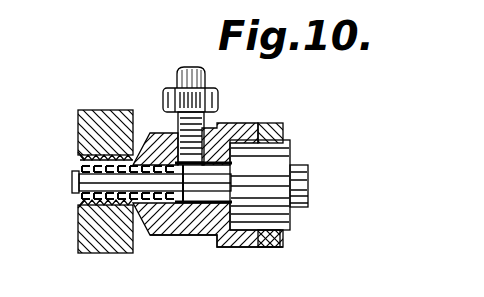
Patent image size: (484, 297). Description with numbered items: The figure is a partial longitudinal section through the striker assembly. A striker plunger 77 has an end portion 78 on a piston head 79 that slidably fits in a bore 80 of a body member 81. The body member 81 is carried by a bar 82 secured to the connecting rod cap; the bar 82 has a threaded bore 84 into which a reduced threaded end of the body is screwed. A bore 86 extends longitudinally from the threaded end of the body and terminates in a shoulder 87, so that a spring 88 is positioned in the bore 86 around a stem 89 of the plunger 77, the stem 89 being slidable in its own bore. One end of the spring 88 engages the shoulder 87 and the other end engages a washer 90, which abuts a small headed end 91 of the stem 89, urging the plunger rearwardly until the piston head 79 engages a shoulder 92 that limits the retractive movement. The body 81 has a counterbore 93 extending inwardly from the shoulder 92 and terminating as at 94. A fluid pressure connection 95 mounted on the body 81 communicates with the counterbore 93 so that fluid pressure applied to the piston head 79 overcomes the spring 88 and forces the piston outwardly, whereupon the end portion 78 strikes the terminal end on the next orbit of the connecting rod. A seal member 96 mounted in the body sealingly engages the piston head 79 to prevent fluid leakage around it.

The striker plunger 77 is at (310, 176).
The end portion 78 is at (308, 202).
The piston head 79 is at (290, 139).
The bore 80 is at (261, 139).
The body member 81 is at (213, 247).
The bar 82 is at (92, 112).
The threaded bore 84 is at (80, 157).
The bore 86 is at (78, 169).
The shoulder 87 is at (148, 146).
The spring 88 is at (84, 148).
The stem 89 is at (182, 200).
The washer 90 is at (78, 197).
The small headed end 91 is at (72, 181).
The shoulder 92 is at (235, 139).
The counterbore 93 is at (192, 200).
The counterbore termination 94 is at (169, 136).
The fluid pressure connection 95 is at (160, 55).
The seal member 96 is at (269, 246).